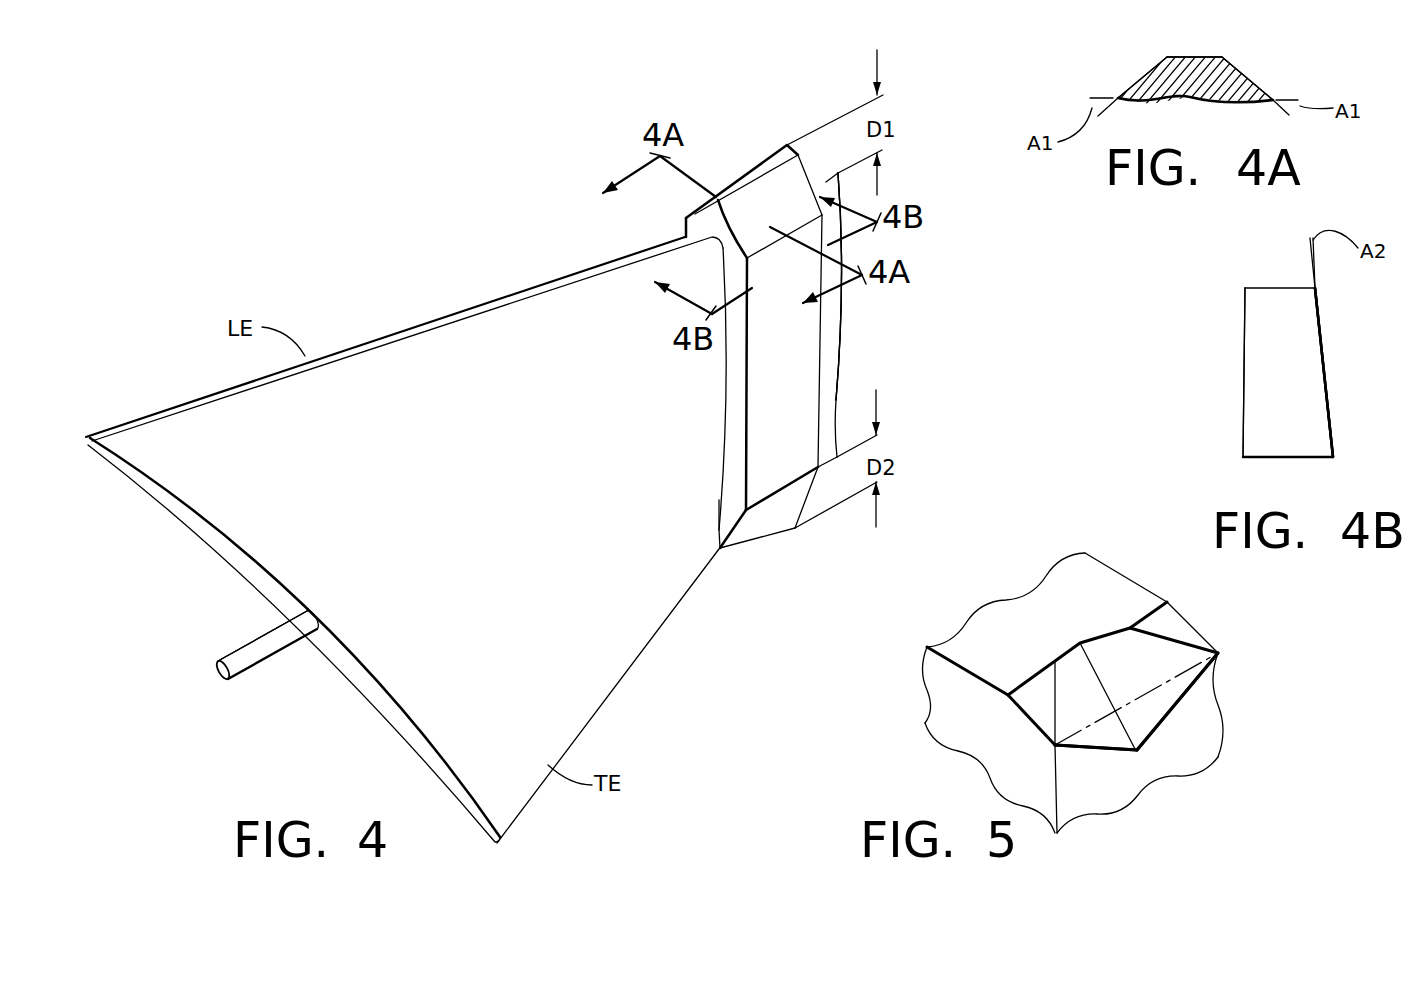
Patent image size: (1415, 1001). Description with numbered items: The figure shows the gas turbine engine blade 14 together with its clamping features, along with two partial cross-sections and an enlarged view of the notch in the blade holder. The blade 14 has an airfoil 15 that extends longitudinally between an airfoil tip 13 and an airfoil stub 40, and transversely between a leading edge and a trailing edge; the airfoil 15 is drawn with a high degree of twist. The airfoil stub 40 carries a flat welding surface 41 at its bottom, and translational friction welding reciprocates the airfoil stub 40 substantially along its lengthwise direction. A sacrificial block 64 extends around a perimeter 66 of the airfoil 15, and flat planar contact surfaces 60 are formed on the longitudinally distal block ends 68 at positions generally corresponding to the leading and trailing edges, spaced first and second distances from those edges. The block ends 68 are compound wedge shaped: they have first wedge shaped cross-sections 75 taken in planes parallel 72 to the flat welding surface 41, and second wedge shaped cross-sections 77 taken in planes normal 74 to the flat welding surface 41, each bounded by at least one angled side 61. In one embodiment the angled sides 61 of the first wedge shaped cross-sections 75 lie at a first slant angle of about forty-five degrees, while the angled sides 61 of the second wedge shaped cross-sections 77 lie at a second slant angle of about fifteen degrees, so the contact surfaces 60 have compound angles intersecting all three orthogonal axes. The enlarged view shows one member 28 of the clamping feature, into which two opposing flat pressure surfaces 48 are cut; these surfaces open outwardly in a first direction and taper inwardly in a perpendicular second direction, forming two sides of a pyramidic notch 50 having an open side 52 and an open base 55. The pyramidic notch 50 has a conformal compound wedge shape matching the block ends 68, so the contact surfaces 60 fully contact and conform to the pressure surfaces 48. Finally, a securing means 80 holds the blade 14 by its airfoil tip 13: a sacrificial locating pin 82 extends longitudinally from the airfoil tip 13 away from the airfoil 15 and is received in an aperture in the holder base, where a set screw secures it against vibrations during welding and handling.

In FIG. 4, the airfoil tip 13 is at (382, 700).
In FIG. 4, the gas turbine engine blade 14 is at (669, 636).
In FIG. 4, the airfoil 15 is at (250, 435).
In FIG. 5, the member 28 is at (1018, 775).
In FIG. 4, the airfoil stub 40 is at (830, 368).
In FIG. 4, the flat welding surface 41 is at (843, 305).
In FIG. 5, the pressure surfaces 48 is at (1117, 678).
In FIG. 5, the pyramidic notch 50 is at (1100, 722).
In FIG. 5, the open side 52 is at (1076, 636).
In FIG. 5, the open base 55 is at (1158, 735).
In FIG. 4, the contact surfaces 60 is at (780, 185).
In FIG. 4A, the contact surfaces 60 is at (1228, 56).
In FIG. 4B, the contact surfaces 60 is at (1332, 420).
In FIG. 4A, the angled side 61 is at (1127, 88).
In FIG. 4B, the angled side 61 is at (1316, 295).
In FIG. 4, the block 64 is at (801, 353).
In FIG. 4, the perimeter 66 is at (717, 437).
In FIG. 4, the block ends 68 is at (728, 518).
In FIG. 4A, the planes parallel 72 is at (1188, 77).
In FIG. 4B, the planes normal 74 is at (1318, 440).
In FIG. 4A, the first wedge shaped cross-sections 75 is at (1232, 75).
In FIG. 4B, the second wedge shaped cross-sections 77 is at (1277, 435).
In FIG. 4, the securing means 80 is at (190, 658).
In FIG. 4, the sacrificial locating pin 82 is at (270, 640).